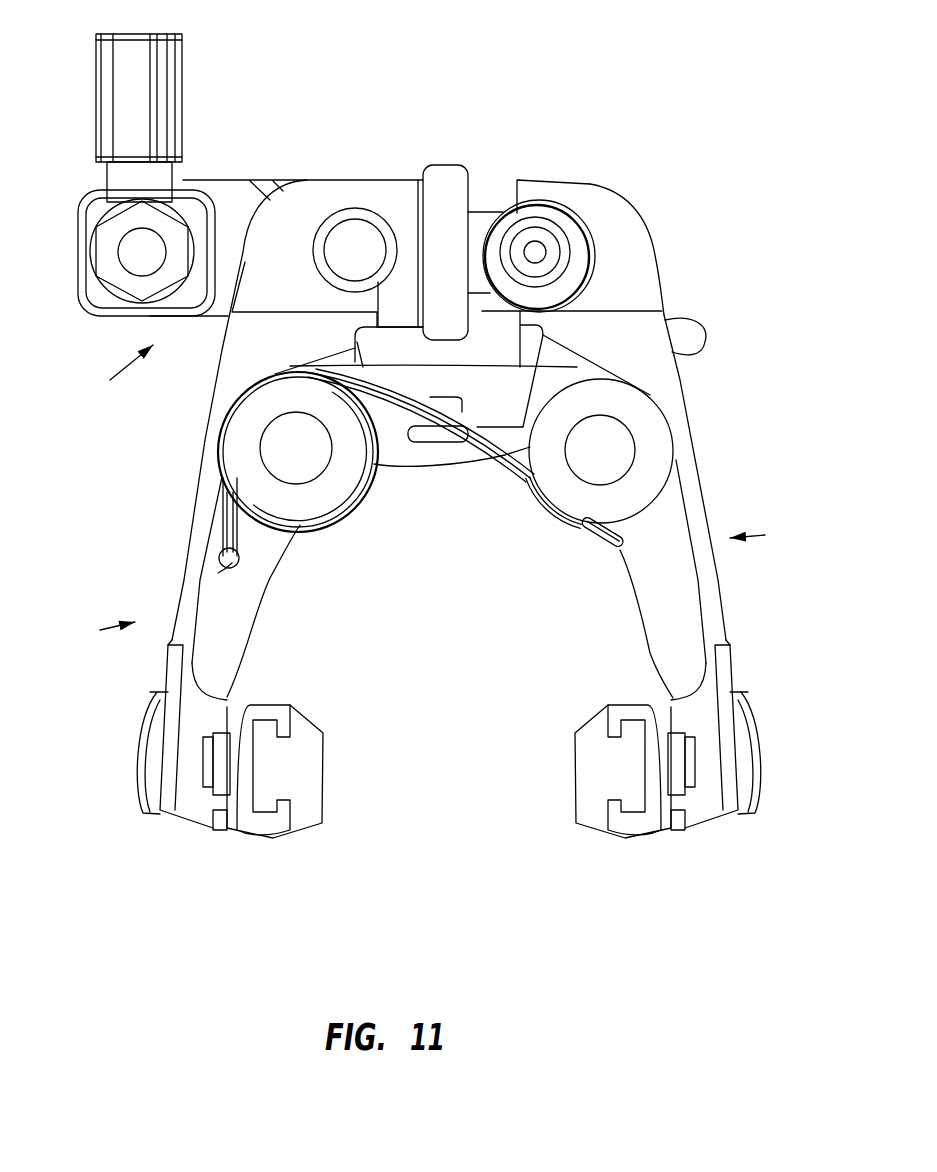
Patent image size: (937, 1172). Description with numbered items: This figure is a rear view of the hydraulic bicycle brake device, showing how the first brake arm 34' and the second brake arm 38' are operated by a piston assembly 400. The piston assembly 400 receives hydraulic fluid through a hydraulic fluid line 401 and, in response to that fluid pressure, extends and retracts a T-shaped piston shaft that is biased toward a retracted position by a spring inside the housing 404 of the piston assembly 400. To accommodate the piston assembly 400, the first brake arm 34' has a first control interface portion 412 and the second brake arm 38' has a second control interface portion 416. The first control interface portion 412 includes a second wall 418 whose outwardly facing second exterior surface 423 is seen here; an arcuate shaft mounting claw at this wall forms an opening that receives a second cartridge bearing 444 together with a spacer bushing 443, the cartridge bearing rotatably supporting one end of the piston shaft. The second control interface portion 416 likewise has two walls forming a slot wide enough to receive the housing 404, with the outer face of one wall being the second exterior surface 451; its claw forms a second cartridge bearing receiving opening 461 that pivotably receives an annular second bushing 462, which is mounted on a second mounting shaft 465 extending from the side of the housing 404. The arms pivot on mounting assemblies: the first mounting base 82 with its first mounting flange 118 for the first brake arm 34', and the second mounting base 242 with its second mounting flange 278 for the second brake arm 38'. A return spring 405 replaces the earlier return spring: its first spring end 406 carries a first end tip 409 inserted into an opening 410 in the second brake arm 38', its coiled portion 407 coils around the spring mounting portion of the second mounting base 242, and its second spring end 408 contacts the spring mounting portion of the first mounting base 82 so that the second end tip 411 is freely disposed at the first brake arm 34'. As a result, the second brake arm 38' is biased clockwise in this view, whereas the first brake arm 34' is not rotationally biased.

The hydraulic fluid line 401 is at (122, 70).
The housing 404 is at (140, 327).
The piston assembly 400 is at (109, 369).
The second control interface portion 416 is at (250, 222).
The second exterior surface 451 is at (302, 215).
The second cartridge bearing receiving opening 461 is at (340, 214).
The second mounting shaft 465 is at (353, 238).
The second bushing 462 is at (382, 228).
The spacer bushing 443 is at (510, 223).
The second cartridge bearing 444 is at (545, 232).
The second wall 418 is at (595, 184).
The first control interface portion 412 is at (655, 185).
The second exterior surface 423 is at (620, 245).
The first mounting base 82 is at (680, 393).
The first mounting flange 118 is at (657, 447).
The first brake arm 34' is at (761, 539).
The second mounting base 242 is at (237, 387).
The second mounting flange 278 is at (243, 428).
The first spring end 406 is at (227, 513).
The first end tip 409 is at (227, 548).
The opening 410 is at (218, 573).
The second brake arm 38' is at (98, 630).
The coiled portion 407 is at (347, 507).
The return spring 405 is at (447, 440).
The second spring end 408 is at (528, 482).
The second end tip 411 is at (622, 547).